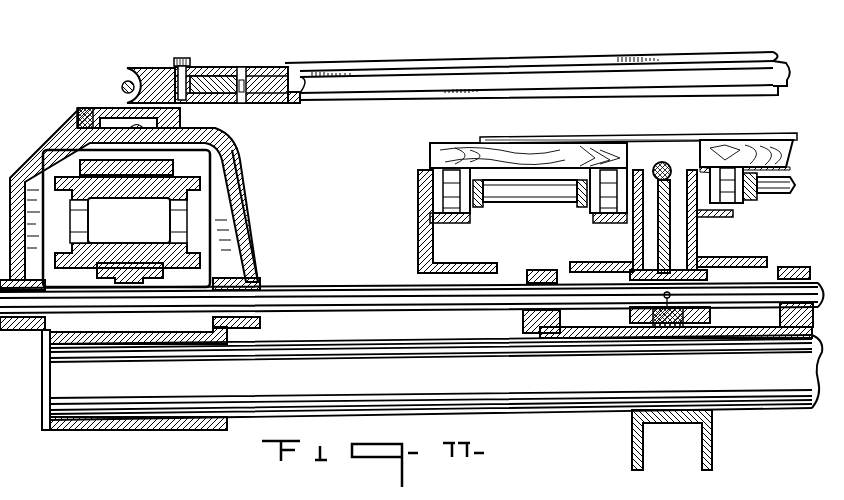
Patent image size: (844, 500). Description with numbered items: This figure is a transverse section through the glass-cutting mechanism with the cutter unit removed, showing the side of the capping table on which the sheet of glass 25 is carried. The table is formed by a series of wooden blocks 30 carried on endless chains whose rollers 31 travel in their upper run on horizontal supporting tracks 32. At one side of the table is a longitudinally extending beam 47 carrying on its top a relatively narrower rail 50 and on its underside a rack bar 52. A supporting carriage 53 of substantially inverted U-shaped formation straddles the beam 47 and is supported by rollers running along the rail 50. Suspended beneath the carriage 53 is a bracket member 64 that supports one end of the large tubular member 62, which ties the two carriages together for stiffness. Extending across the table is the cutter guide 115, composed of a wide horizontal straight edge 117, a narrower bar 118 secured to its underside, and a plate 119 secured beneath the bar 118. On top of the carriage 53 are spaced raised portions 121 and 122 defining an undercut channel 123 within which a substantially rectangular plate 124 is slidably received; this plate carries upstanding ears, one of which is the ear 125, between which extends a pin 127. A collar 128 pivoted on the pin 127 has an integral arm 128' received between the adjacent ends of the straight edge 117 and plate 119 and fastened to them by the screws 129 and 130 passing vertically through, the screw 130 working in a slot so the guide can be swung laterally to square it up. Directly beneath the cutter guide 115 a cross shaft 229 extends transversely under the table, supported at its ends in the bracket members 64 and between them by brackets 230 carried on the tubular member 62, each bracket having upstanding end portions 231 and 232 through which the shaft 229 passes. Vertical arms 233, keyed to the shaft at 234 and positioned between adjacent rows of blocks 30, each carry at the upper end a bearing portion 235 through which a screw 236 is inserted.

The cutter guide 115 is at (537, 73).
The straight edge 117 is at (403, 40).
The bar 118 is at (362, 83).
The plate 119 is at (313, 97).
The raised portion 121 is at (80, 110).
The raised portion 122 is at (178, 115).
The undercut recess or channel 123 is at (147, 128).
The rectangular plate 124 is at (197, 130).
The upstanding ear 125 is at (103, 97).
The pin 127 is at (130, 80).
The collar 128 is at (194, 70).
The arm 128' is at (221, 65).
The screw 129 is at (182, 57).
The screw 130 is at (243, 66).
The supporting carriage 53 is at (236, 165).
The rail 50 is at (126, 218).
The beam 47 is at (130, 197).
The rack bar 52 is at (125, 262).
The wooden block 30 is at (552, 152).
The roller 31 is at (450, 182).
The supporting track 32 is at (432, 212).
The sheet of glass 25 is at (748, 133).
The bearing portion 235 is at (648, 172).
The screw 236 is at (690, 160).
The vertical arm 233 is at (695, 230).
The upstanding end portion 232 is at (800, 267).
The upstanding end portion 231 is at (548, 270).
The cross shaft 229 is at (353, 287).
The bracket 230 is at (587, 330).
The key 234 is at (667, 322).
The tubular member 62 is at (543, 383).
The bracket member 64 is at (180, 420).